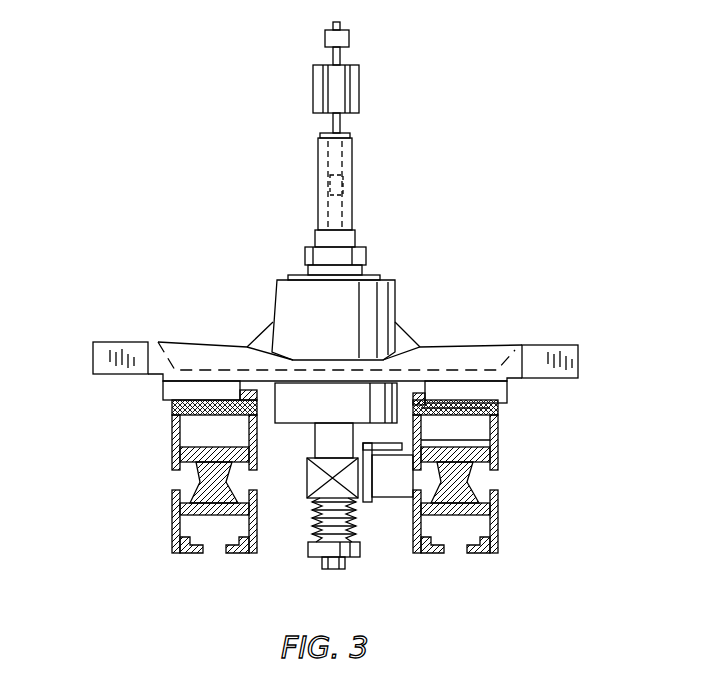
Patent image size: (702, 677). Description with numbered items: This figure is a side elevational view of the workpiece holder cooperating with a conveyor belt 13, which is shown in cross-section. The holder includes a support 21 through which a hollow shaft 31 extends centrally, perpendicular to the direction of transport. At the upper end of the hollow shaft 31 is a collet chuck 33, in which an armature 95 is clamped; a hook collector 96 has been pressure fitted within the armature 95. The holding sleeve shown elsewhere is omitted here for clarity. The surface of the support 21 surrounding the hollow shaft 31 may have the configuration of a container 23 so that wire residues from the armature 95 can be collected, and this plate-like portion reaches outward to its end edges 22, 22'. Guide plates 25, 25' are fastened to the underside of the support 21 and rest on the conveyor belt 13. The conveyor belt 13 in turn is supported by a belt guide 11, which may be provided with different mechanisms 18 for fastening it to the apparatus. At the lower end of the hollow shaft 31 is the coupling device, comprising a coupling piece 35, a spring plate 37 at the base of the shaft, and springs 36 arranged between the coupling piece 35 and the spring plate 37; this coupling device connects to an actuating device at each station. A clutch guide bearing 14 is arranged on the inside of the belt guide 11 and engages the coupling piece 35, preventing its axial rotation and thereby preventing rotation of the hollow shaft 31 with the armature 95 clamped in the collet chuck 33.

The hook collector 96 is at (348, 36).
The armature 95 is at (359, 97).
The collet chuck 33 is at (322, 136).
The hollow shaft 31 is at (320, 215).
The support 21 is at (277, 298).
The container 23 is at (448, 368).
The plate end edge 22 is at (581, 327).
The plate end edge 22' is at (95, 327).
The guide plate 25 is at (505, 399).
The guide plate 25' is at (167, 402).
The fastening mechanisms 18 is at (200, 471).
The belt guide 11 is at (498, 555).
The conveyor belt 13 is at (472, 443).
The clutch guide bearing 14 is at (372, 502).
The coupling piece 35 is at (306, 488).
The springs 36 is at (312, 524).
The spring plate 37 is at (318, 552).